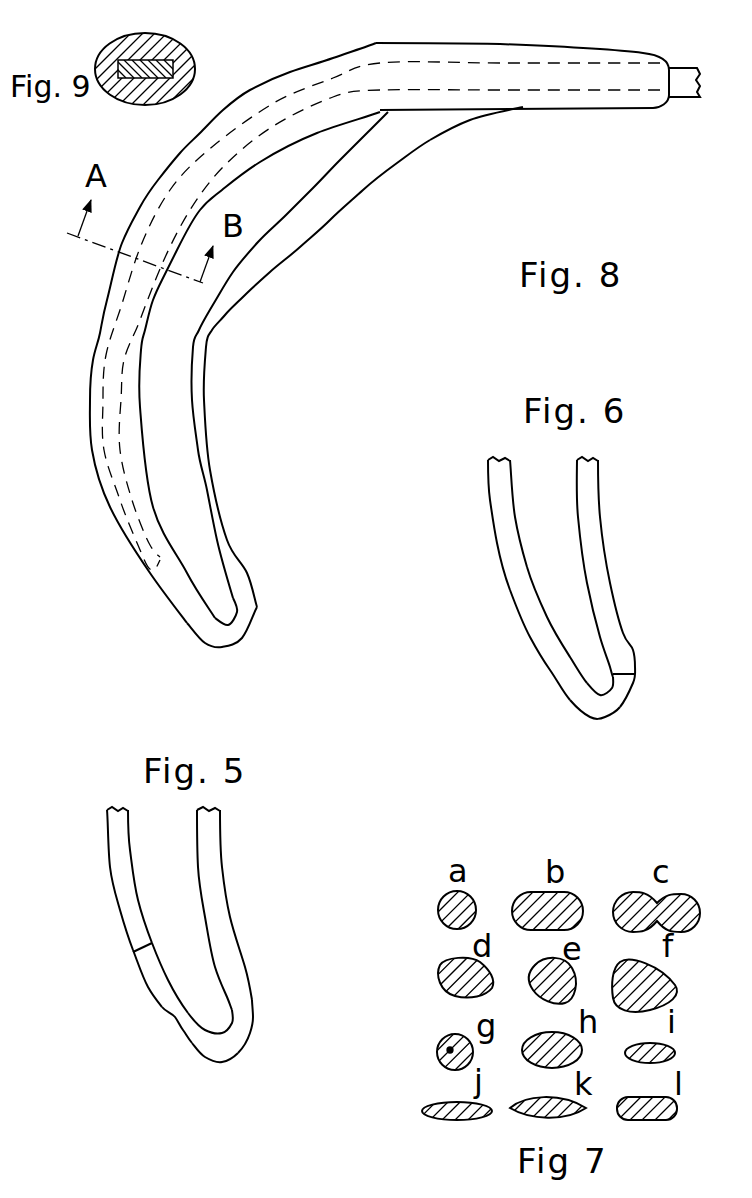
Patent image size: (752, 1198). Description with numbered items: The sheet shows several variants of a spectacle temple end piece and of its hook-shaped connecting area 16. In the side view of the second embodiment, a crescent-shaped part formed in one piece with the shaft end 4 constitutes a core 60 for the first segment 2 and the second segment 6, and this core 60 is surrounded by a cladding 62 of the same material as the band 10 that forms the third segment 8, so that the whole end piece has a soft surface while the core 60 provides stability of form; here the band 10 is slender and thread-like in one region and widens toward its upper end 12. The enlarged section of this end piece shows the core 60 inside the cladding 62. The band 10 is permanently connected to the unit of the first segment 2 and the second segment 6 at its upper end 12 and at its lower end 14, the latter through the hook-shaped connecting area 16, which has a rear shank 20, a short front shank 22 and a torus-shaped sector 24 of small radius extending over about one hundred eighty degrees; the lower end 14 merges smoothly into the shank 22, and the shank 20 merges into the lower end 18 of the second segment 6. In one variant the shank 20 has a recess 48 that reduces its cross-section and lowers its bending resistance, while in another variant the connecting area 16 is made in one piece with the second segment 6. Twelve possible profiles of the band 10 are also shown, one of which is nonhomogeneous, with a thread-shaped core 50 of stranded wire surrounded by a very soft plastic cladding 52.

In FIG. 8, the first segment 2 is at (594, 127).
In FIG. 8, the shaft end 4 is at (688, 99).
In FIG. 8, the second segment 6 is at (347, 333).
In FIG. 6, the second segment 6 is at (512, 584).
In FIG. 5, the second segment 6 is at (126, 946).
In FIG. 8, the third segment 8 is at (357, 357).
In FIG. 6, the third segment 8 is at (634, 567).
In FIG. 5, the third segment 8 is at (254, 905).
In FIG. 8, the band 10 is at (205, 402).
In FIG. 6, the band 10 is at (600, 557).
In FIG. 5, the band 10 is at (213, 825).
In FIG. 8, the upper end of the band 12 is at (439, 120).
In FIG. 8, the lower end of the band 14 is at (222, 548).
In FIG. 6, the lower end of the band 14 is at (610, 628).
In FIG. 5, the lower end of the band 14 is at (235, 972).
In FIG. 8, the hook-shaped connecting area 16 is at (240, 643).
In FIG. 6, the hook-shaped connecting area 16 is at (590, 722).
In FIG. 5, the hook-shaped connecting area 16 is at (222, 1067).
In FIG. 6, the lower end of the second segment 18 is at (503, 540).
In FIG. 5, the lower end of the second segment 18 is at (127, 918).
In FIG. 6, the rear shank 20 is at (550, 670).
In FIG. 5, the rear shank 20 is at (140, 963).
In FIG. 6, the short front shank 22 is at (623, 688).
In FIG. 5, the short front shank 22 is at (247, 1012).
In FIG. 6, the torus-shaped sector 24 is at (607, 707).
In FIG. 5, the torus-shaped sector 24 is at (242, 1042).
In FIG. 5, the recess 48 is at (183, 1023).
In FIG. 7, the thread-shaped core 50 is at (446, 1052).
In FIG. 7, the cladding 52 is at (448, 1042).
In FIG. 8, the core 60 is at (110, 320).
In FIG. 9, the core 60 is at (180, 38).
In FIG. 8, the cladding 62 is at (98, 457).
In FIG. 9, the cladding 62 is at (185, 78).